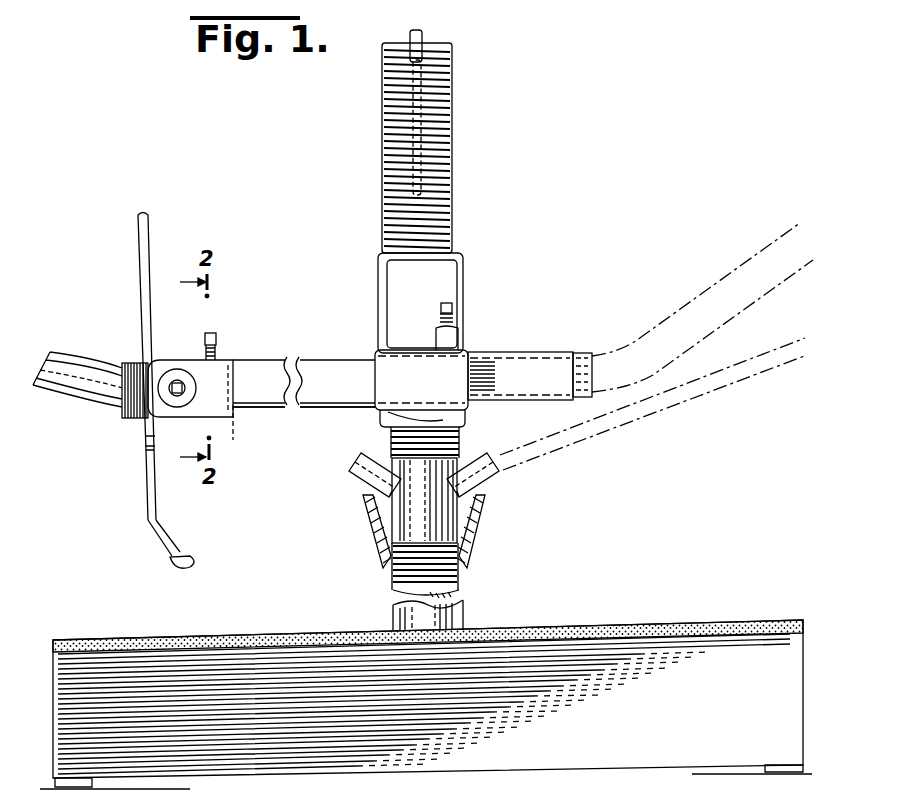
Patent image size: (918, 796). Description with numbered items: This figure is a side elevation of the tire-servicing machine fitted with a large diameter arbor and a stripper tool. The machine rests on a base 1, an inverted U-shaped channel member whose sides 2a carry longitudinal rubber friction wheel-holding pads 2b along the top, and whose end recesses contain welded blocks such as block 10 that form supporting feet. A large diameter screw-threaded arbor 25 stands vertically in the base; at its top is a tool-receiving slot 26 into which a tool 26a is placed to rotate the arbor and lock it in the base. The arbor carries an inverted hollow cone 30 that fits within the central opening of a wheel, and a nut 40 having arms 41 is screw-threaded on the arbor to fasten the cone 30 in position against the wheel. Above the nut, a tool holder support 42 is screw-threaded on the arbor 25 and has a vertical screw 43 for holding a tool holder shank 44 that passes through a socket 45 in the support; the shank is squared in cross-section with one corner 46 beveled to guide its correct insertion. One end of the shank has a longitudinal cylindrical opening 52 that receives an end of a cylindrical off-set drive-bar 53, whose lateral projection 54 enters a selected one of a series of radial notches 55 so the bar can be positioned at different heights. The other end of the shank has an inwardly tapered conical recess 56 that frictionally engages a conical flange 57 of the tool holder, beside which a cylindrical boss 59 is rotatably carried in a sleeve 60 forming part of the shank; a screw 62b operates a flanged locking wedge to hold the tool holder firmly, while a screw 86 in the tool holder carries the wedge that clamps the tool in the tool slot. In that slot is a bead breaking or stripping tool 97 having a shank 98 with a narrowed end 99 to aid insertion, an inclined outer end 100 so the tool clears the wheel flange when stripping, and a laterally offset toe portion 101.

The base 1 is at (744, 608).
The sides 2a is at (318, 742).
The longitudinal rubber friction wheel-holding pads 2b is at (95, 645).
The block 10 is at (775, 765).
The large diameter screw-threaded arbor 25 is at (382, 128).
The tool-receiving slot 26 is at (410, 50).
The tool 26a is at (424, 33).
The inverted hollow cone 30 is at (485, 522).
The nut 40 is at (412, 512).
The arms 41 is at (350, 474).
The tool holder support 42 is at (456, 262).
The vertical screw 43 is at (440, 320).
The tool holder shank 44 is at (317, 362).
The socket 45 is at (388, 367).
The beveled corner 46 is at (330, 408).
The longitudinal cylindrical opening 52 is at (520, 352).
The cylindrical off-set drive-bar 53 is at (770, 243).
The lateral projection 54 is at (592, 352).
The radial notches 55 is at (593, 370).
The inwardly tapered conical recess 56 is at (239, 435).
The conical flange 57 is at (128, 372).
The cylindrical boss 59 is at (174, 376).
The sleeve 60 is at (157, 366).
The screw 62b is at (215, 341).
The screw 86 is at (186, 388).
The bead breaking or stripping tool 97 is at (134, 282).
The shank 98 is at (148, 236).
The narrowed end 99 is at (148, 490).
The inclined outer end 100 is at (168, 556).
The laterally offset toe portion 101 is at (194, 562).